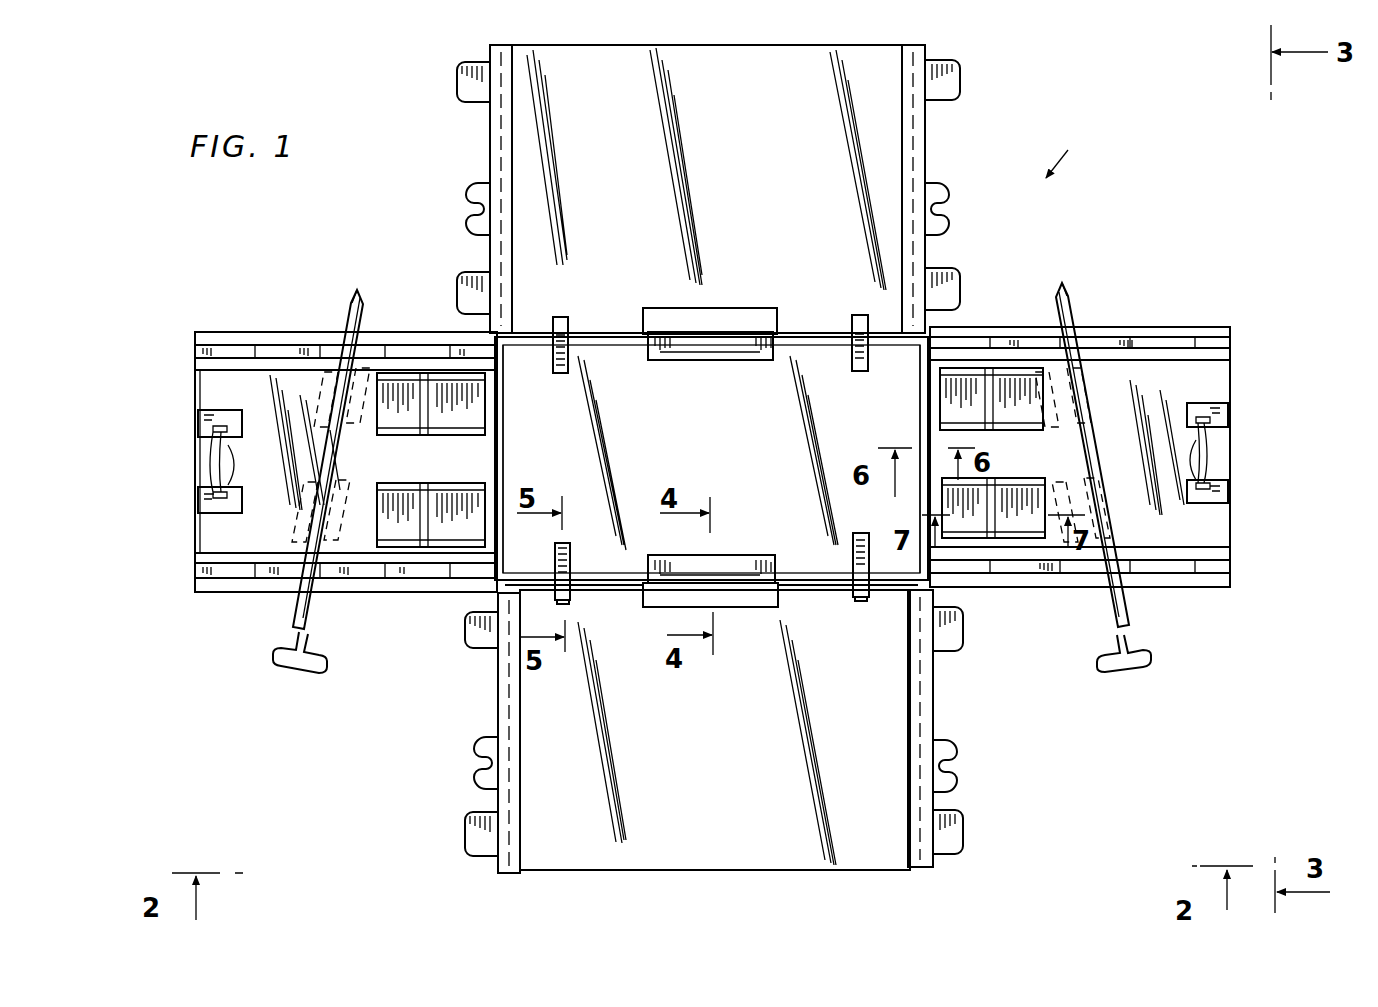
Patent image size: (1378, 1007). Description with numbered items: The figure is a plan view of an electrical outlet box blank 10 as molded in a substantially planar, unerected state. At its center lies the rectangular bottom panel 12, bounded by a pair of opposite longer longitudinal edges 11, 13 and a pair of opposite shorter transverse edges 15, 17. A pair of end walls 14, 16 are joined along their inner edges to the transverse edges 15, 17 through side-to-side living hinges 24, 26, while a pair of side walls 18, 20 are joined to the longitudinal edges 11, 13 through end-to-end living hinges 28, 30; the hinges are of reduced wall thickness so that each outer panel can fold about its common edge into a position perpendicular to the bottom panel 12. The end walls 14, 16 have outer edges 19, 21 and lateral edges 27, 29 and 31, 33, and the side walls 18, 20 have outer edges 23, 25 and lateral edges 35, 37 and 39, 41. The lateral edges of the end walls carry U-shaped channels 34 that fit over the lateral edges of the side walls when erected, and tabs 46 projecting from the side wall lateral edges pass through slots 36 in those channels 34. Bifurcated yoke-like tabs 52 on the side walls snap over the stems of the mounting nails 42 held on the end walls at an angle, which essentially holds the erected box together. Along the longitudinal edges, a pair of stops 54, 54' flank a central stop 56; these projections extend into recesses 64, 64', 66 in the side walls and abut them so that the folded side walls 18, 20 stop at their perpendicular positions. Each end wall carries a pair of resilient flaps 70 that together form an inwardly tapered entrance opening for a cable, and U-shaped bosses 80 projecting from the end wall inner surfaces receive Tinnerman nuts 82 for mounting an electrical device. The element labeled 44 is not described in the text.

The outlet box blank 10 is at (1064, 150).
The longitudinal edge 11 is at (819, 334).
The bottom panel 12 is at (702, 437).
The longitudinal edge 13 is at (800, 588).
The end wall 14 is at (272, 452).
The transverse edge 15 is at (502, 445).
The end wall 16 is at (1172, 397).
The transverse edge 17 is at (926, 377).
The side wall 18 is at (753, 172).
The outer edge 19 is at (195, 394).
The side wall 20 is at (726, 737).
The outer edge 21 is at (1232, 390).
The outer edge 23 is at (707, 48).
The living hinge 24 is at (497, 412).
The outer edge 25 is at (716, 876).
The living hinge 26 is at (920, 411).
The lateral edge 27 is at (206, 594).
The living hinge 28 is at (600, 335).
The lateral edge 29 is at (226, 332).
The living hinge 30 is at (626, 592).
The lateral edge 31 is at (1189, 588).
The lateral edge 33 is at (1134, 334).
The U-shaped channel 34 is at (290, 345).
The lateral edge 35 is at (491, 145).
The slot 36 is at (240, 592).
The lateral edge 37 is at (929, 135).
The lateral edge 39 is at (495, 796).
The lateral edge 41 is at (935, 706).
The mounting nail 42 is at (358, 302).
The lower left corner of bottom panel 44 is at (501, 872).
The tab 46 is at (951, 280).
The bifurcated yoke-like tab 52 is at (475, 742).
The stop 54 is at (580, 458).
The stop 54' is at (856, 456).
The stop 56 is at (759, 566).
The recess 64 is at (584, 620).
The recess 64' is at (861, 627).
The recess 66 is at (746, 592).
The resilient flap 70 is at (400, 391).
The U-shaped boss 80 is at (1234, 420).
The Tinnerman nut 82 is at (1232, 444).